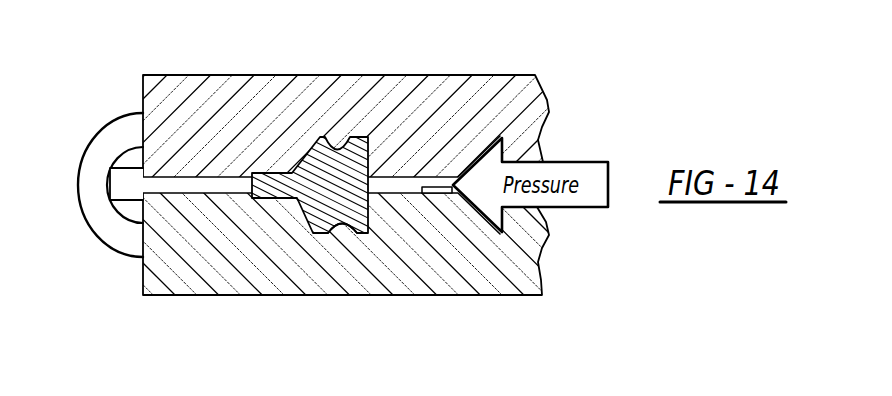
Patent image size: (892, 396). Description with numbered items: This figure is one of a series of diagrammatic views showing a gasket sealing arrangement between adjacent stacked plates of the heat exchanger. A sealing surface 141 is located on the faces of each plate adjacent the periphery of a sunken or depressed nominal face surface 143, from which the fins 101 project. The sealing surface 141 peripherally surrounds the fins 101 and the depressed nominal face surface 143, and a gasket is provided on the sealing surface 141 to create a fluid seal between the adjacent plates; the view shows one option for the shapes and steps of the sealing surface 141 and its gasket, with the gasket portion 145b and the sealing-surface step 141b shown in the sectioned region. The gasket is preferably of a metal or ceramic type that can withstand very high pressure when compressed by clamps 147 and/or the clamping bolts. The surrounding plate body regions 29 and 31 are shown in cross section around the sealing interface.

The housing body 29 is at (335, 97).
The lower housing portion 31 is at (527, 254).
The fins 101 is at (452, 194).
The sealing surface 141 is at (342, 145).
The insert protrusion 141b is at (343, 225).
The depressed nominal face surface 143 is at (387, 176).
The insert body portion 145b is at (330, 195).
The clamps 147 is at (122, 130).